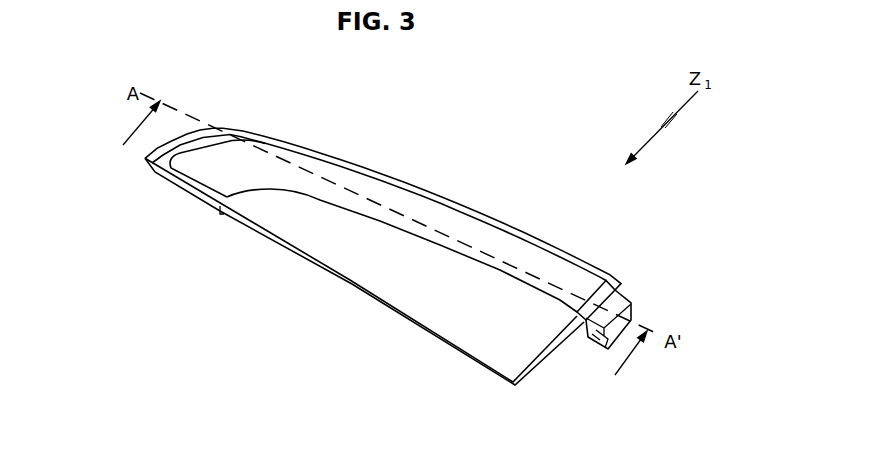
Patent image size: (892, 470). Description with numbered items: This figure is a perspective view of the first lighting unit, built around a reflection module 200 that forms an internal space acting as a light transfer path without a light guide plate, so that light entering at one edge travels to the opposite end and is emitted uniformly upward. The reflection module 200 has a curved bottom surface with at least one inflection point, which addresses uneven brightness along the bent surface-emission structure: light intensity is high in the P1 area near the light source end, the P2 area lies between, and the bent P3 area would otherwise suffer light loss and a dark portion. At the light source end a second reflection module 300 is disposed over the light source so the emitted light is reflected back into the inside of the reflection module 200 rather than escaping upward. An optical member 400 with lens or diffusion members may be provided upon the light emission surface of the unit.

The reflection module 200 is at (571, 322).
The second reflection module 300 is at (633, 303).
The optical member 400 is at (503, 215).
The P1 area P1 is at (503, 216).
The P2 area P2 is at (313, 133).
The bent P3 area P3 is at (157, 62).